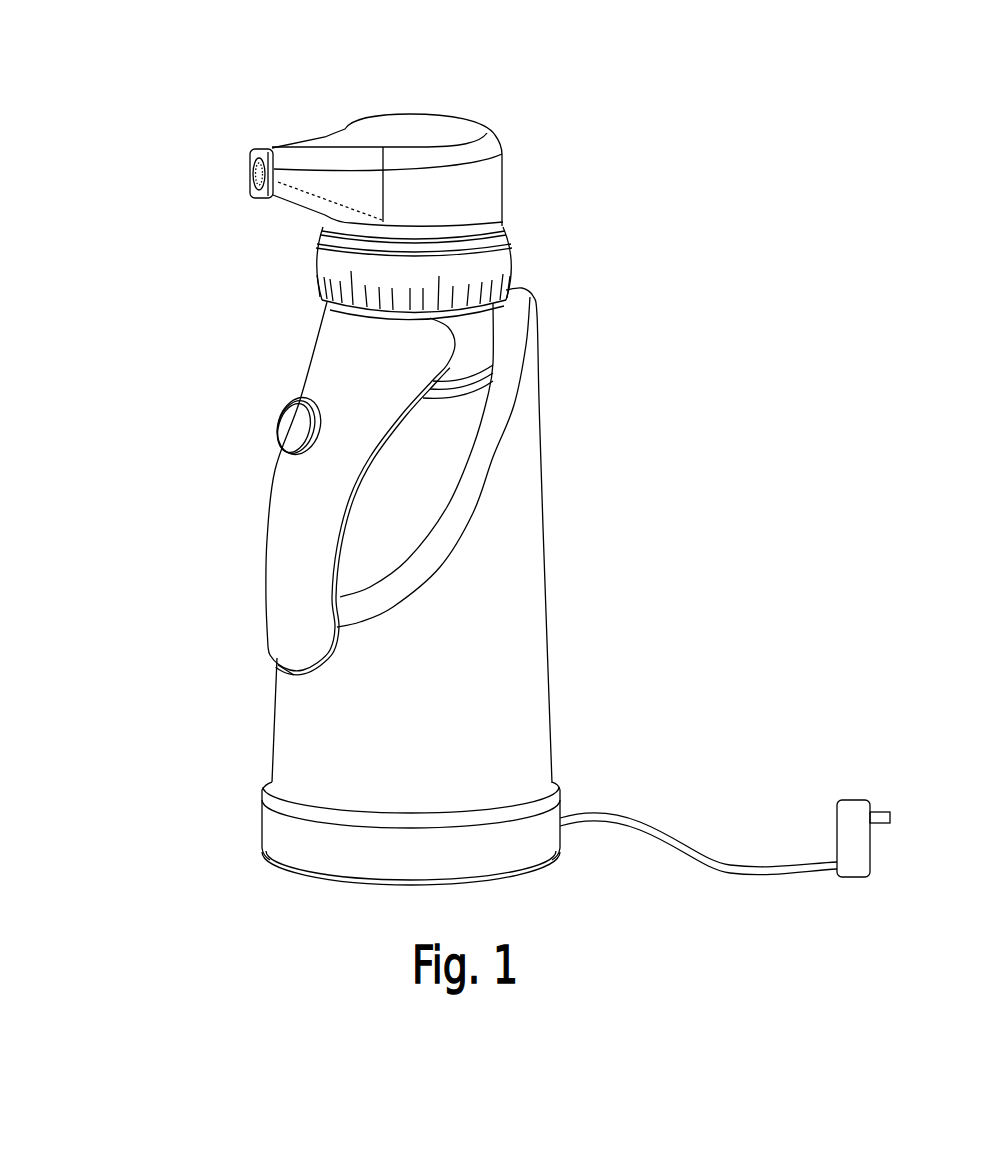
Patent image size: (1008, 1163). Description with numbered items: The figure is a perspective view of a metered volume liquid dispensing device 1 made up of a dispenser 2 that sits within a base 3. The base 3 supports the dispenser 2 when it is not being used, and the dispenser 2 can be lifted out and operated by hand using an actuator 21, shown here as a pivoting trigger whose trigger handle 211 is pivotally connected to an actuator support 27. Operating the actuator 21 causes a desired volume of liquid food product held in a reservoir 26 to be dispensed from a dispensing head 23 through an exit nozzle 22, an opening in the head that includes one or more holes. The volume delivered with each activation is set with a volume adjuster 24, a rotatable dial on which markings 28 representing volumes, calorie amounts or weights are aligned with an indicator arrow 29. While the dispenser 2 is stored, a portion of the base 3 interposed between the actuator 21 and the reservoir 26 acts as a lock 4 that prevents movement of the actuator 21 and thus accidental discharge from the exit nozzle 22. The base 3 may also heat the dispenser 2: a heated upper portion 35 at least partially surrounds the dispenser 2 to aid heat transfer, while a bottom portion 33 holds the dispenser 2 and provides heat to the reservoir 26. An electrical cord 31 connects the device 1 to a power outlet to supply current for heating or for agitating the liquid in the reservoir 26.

The metered volume liquid dispensing device 1 is at (168, 373).
The dispenser 2 is at (570, 122).
The base 3 is at (625, 372).
The lock 4 is at (293, 672).
The actuator 21 is at (273, 457).
The exit nozzle 22 is at (252, 155).
The dispensing head 23 is at (447, 113).
The volume adjuster 24 is at (513, 252).
The reservoir 26 is at (467, 417).
The actuator support 27 is at (473, 332).
The marking 28 is at (350, 275).
The indicator arrow 29 is at (350, 322).
The electrical cord 31 is at (732, 847).
The bottom portion 33 is at (280, 828).
The upper portion 35 is at (523, 529).
The trigger handle 211 is at (277, 568).